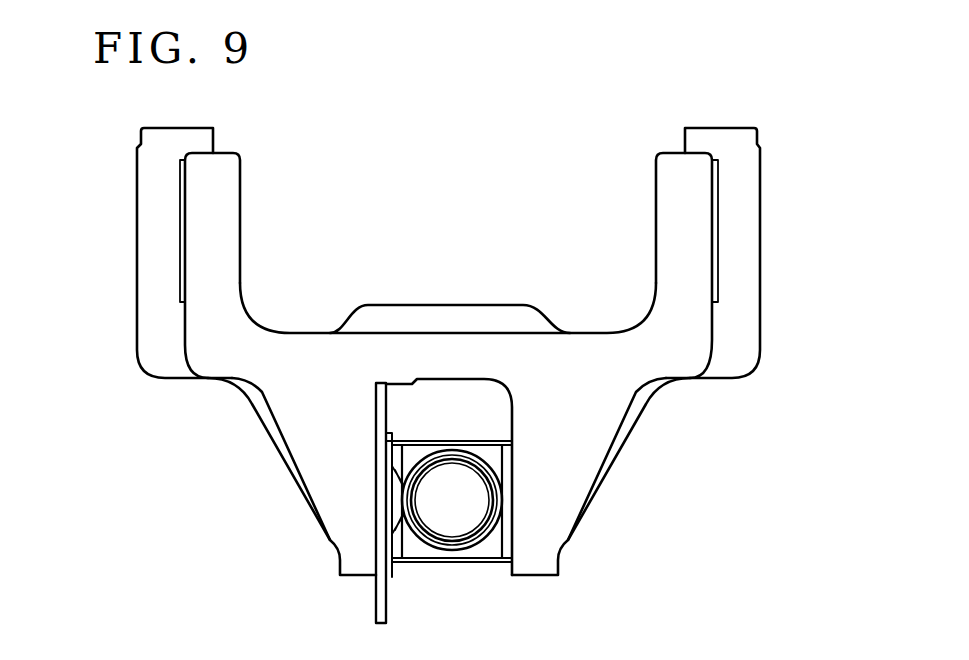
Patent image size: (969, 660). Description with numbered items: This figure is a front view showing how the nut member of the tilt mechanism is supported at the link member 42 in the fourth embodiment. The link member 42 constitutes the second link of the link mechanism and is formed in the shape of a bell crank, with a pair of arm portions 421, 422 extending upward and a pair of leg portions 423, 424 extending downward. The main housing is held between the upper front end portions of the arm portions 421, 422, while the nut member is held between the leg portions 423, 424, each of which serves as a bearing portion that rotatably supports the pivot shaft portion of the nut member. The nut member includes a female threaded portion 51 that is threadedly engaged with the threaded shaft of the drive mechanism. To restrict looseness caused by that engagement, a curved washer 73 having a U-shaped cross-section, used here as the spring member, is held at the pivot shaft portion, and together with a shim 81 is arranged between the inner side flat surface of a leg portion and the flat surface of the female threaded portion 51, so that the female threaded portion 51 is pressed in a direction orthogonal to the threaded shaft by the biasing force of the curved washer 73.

The link member 42 is at (670, 140).
The arm portion 421 is at (198, 220).
The arm portion 422 is at (700, 211).
The leg portion 423 is at (315, 440).
The leg portion 424 is at (595, 450).
The shim 81 is at (383, 596).
The curved washer 73 is at (390, 577).
The female threaded portion 51 is at (475, 548).